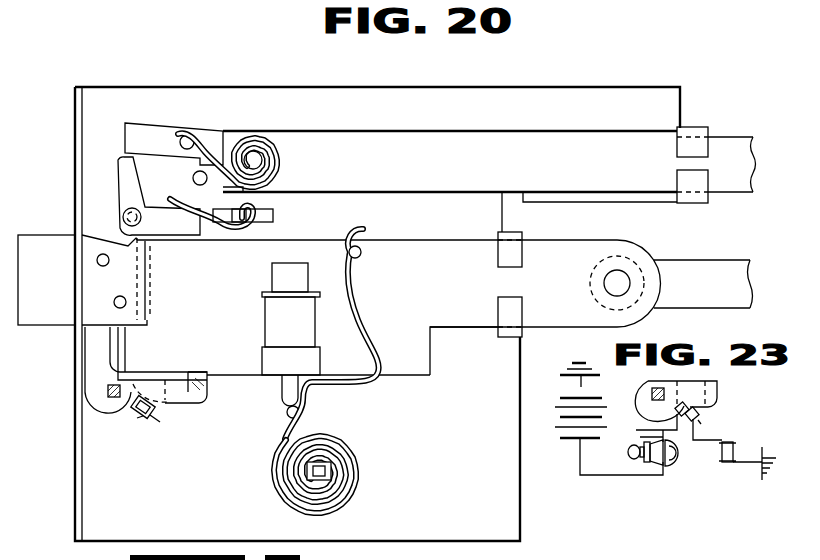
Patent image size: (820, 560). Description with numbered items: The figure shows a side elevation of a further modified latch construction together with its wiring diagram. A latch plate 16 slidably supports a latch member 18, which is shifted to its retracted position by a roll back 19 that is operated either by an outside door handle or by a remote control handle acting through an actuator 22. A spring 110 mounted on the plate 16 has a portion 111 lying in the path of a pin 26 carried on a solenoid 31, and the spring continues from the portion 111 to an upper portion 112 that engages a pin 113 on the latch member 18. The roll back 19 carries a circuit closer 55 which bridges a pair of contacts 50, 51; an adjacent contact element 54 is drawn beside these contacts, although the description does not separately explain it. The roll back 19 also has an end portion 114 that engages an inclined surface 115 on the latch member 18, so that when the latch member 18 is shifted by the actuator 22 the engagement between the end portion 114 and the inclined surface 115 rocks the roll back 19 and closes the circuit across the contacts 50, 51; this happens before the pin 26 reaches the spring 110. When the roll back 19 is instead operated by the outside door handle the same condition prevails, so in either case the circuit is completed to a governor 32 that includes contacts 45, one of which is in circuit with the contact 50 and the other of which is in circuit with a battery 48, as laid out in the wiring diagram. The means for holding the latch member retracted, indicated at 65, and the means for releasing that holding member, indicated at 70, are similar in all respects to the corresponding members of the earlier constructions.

In FIG. 20, the latch plate 16 is at (521, 465).
In FIG. 20, the latch member 18 is at (430, 375).
In FIG. 20, the roll back 19 is at (90, 357).
In FIG. 23, the roll back 19 is at (638, 403).
In FIG. 20, the actuator 22 is at (706, 308).
In FIG. 20, the pin 26 is at (286, 402).
In FIG. 20, the solenoid 31 is at (268, 308).
In FIG. 23, the solenoid 31 is at (734, 452).
In FIG. 23, the governor 32 is at (655, 462).
In FIG. 23, the contacts 45 is at (678, 460).
In FIG. 23, the battery 48 is at (581, 387).
In FIG. 20, the contact 50 is at (135, 412).
In FIG. 23, the contact 50 is at (650, 417).
In FIG. 20, the contact 51 is at (156, 418).
In FIG. 23, the contact 51 is at (728, 441).
In FIG. 20, the contact 54 is at (158, 412).
In FIG. 23, the contact 54 is at (702, 406).
In FIG. 20, the circuit closer 55 is at (173, 405).
In FIG. 23, the circuit closer 55 is at (716, 385).
In FIG. 20, the means for holding the latch member retracted 65 is at (117, 168).
In FIG. 20, the means for releasing the holding member 70 is at (505, 134).
In FIG. 20, the spring 110 is at (359, 474).
In FIG. 20, the portion of the spring 111 is at (315, 392).
In FIG. 20, the upper portion of the spring 112 is at (367, 255).
In FIG. 20, the pin 113 is at (349, 250).
In FIG. 20, the end portion of the roll back 114 is at (207, 373).
In FIG. 20, the inclined surface 115 is at (192, 372).